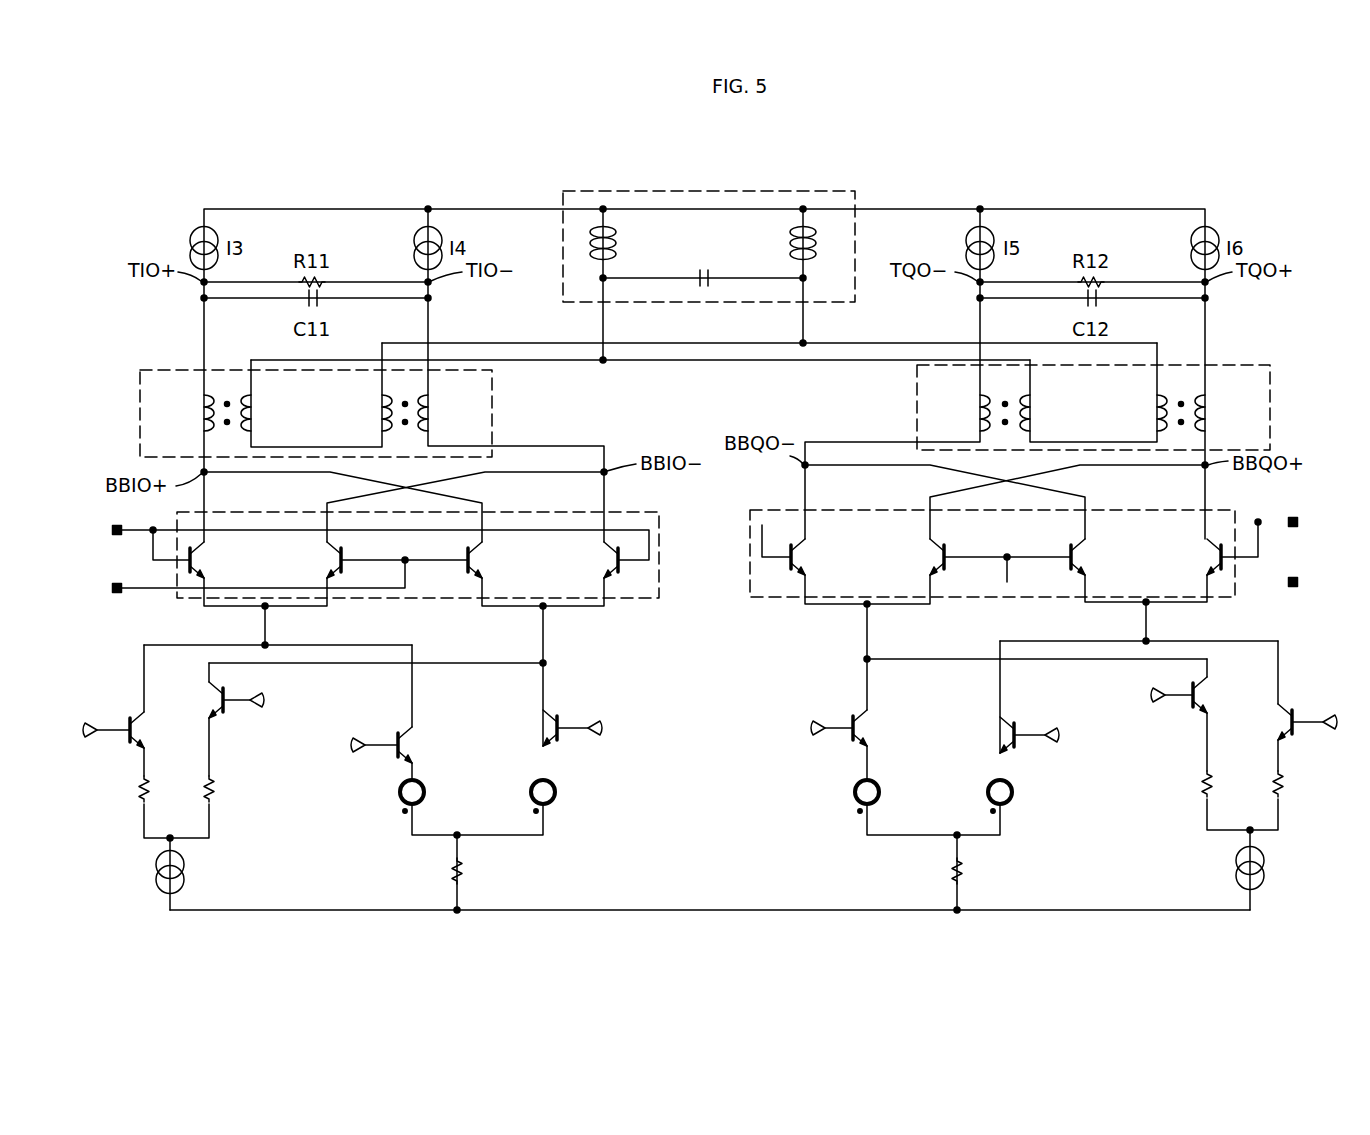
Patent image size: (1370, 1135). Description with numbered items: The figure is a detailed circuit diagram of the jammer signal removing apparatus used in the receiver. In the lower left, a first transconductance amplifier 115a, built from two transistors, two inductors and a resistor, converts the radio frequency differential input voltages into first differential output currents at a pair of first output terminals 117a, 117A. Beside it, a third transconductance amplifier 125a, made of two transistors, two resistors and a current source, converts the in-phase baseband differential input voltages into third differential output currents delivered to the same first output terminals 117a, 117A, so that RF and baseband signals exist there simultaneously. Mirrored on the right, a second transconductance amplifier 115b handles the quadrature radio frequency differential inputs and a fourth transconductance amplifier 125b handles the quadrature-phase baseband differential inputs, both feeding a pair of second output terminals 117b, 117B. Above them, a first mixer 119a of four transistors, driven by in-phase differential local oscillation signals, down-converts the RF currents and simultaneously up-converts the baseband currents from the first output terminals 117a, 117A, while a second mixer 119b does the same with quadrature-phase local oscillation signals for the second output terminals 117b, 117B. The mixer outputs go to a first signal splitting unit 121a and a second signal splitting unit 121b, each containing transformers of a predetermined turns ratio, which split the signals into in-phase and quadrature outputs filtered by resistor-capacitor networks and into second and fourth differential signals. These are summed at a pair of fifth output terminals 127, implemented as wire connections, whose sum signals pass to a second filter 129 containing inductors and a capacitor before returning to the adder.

The second filter 129 is at (780, 190).
The fifth output terminals 127 is at (806, 342).
The first signal splitting unit 121a is at (170, 370).
The second signal splitting unit 121b is at (1244, 366).
The first mixer 119a is at (637, 600).
The second mixer 119b is at (777, 598).
The first output terminal 117a is at (262, 645).
The first output terminal 117A is at (541, 662).
The second output terminal 117B is at (870, 660).
The second output terminal 117b is at (1144, 641).
The third transconductance amplifier 125a is at (252, 840).
The first transconductance amplifier 115a is at (566, 836).
The second transconductance amplifier 115b is at (839, 836).
The fourth transconductance amplifier 125b is at (1189, 834).